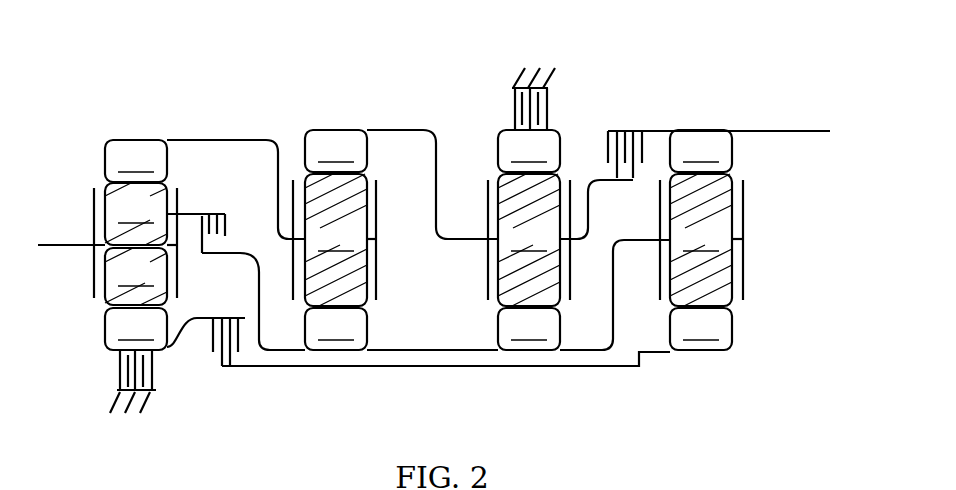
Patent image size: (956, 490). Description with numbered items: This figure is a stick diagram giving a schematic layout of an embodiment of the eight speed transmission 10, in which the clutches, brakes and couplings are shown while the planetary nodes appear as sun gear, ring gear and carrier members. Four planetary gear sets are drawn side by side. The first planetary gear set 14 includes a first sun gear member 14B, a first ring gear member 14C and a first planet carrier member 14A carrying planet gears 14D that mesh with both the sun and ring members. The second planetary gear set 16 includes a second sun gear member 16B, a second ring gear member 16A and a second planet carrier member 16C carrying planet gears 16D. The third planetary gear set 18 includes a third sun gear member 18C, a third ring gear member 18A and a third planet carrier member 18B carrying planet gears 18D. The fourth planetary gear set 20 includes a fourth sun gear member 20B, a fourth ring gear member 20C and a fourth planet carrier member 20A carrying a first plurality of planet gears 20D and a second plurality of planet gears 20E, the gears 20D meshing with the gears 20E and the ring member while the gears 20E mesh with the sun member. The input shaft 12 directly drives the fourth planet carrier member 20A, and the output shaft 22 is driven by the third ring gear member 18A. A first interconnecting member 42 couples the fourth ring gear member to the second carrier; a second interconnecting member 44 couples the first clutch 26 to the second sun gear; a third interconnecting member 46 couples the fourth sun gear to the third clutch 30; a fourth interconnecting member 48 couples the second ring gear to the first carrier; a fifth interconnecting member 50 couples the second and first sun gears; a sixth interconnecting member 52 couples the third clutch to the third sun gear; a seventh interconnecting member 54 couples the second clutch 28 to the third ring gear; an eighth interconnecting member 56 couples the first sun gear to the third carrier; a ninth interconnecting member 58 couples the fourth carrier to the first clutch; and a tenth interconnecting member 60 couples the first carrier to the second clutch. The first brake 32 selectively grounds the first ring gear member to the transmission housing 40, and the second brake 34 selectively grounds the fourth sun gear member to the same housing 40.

The eight speed transmission 10 is at (760, 74).
The input shaft 12 is at (72, 247).
The first planetary gear set 14 is at (528, 370).
The first planet carrier member 14A is at (488, 210).
The first sun gear member 14B is at (529, 329).
The first ring gear member 14C is at (529, 151).
The planet gears 14D is at (529, 240).
The second planetary gear set 16 is at (336, 108).
The second ring gear member 16A is at (336, 151).
The second sun gear member 16B is at (336, 329).
The second planet carrier member 16C is at (378, 255).
The planet gears 16D is at (336, 240).
The third planetary gear set 18 is at (753, 341).
The third ring gear member 18A is at (701, 151).
The third planet carrier member 18B is at (743, 217).
The third sun gear member 18C is at (701, 329).
The planet gears 18D is at (701, 240).
The fourth planetary gear set 20 is at (86, 322).
The fourth planet carrier member 20A is at (90, 222).
The fourth sun gear member 20B is at (136, 329).
The fourth ring gear member 20C is at (136, 161).
The first plurality of planet gears 20D is at (136, 214).
The second plurality of planet gears 20E is at (136, 276).
The output shaft 22 is at (813, 133).
The first clutch 26 is at (230, 228).
The second clutch 28 is at (608, 138).
The third clutch 30 is at (238, 353).
The first brake 32 is at (512, 107).
The second brake 34 is at (118, 378).
The transmission housing 40 is at (147, 405).
The first interconnecting member 42 is at (212, 140).
The second interconnecting member 44 is at (240, 258).
The third interconnecting member 46 is at (169, 354).
The fourth interconnecting member 48 is at (388, 128).
The fifth interconnecting member 50 is at (443, 350).
The sixth interconnecting member 52 is at (407, 370).
The seventh interconnecting member 54 is at (660, 130).
The eighth interconnecting member 56 is at (615, 277).
The ninth interconnecting member 58 is at (187, 215).
The tenth interconnecting member 60 is at (590, 208).